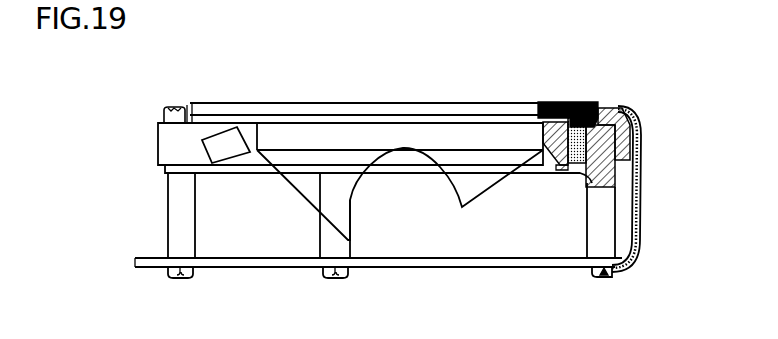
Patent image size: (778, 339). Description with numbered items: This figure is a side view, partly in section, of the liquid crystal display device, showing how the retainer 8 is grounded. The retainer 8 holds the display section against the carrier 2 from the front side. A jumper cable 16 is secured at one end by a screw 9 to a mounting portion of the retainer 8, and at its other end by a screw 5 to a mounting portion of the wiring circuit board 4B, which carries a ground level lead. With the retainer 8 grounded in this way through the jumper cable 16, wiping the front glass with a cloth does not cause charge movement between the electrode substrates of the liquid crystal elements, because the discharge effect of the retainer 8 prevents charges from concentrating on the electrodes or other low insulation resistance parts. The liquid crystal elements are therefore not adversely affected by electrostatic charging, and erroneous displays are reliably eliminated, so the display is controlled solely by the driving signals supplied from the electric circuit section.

The carrier 2 is at (630, 156).
The wiring circuit board 4B is at (552, 258).
The screw 5 is at (608, 270).
The retainer 8 is at (550, 102).
The screw 9 is at (622, 110).
The jumper cable 16 is at (642, 214).